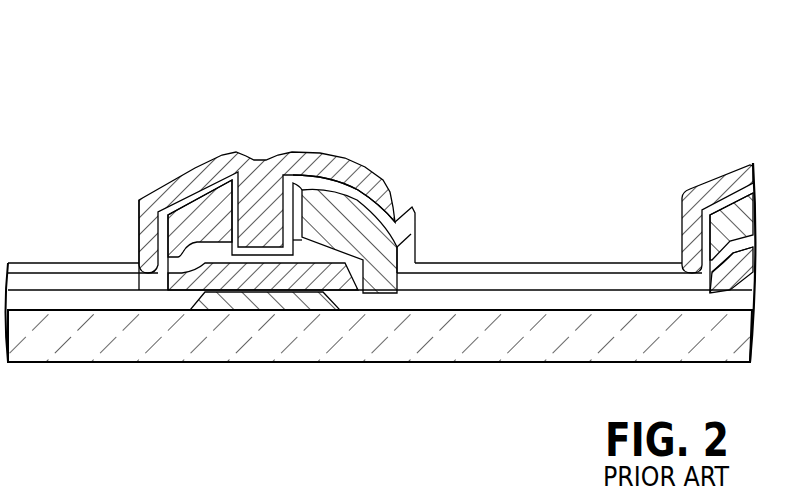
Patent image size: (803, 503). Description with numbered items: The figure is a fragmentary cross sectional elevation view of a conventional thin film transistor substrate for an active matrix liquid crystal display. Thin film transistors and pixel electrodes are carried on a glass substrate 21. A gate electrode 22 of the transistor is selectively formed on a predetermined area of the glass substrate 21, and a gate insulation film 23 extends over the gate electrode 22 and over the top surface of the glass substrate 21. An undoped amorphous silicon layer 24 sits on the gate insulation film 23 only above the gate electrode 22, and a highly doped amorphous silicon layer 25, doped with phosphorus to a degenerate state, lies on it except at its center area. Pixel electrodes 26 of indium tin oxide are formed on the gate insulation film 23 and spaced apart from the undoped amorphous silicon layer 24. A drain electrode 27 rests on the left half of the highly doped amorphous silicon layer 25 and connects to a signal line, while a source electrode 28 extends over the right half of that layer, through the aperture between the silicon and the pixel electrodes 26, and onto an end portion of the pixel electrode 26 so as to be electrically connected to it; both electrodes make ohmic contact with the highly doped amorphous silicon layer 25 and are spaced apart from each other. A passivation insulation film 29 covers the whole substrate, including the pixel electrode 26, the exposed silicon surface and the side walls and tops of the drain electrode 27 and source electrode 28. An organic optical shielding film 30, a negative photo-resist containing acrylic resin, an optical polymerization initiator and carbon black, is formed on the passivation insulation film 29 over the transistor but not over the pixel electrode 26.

The glass substrate 21 is at (70, 342).
The gate electrode 22 is at (210, 303).
The gate insulation film 23 is at (428, 286).
The undoped amorphous silicon layer 24 is at (358, 280).
The highly doped amorphous silicon layer 25 is at (222, 238).
The pixel electrodes 26 is at (497, 285).
The drain electrode 27 is at (175, 216).
The source electrode 28 is at (388, 232).
The passivation insulation film 29 is at (57, 263).
The organic optical shielding film 30 is at (288, 167).